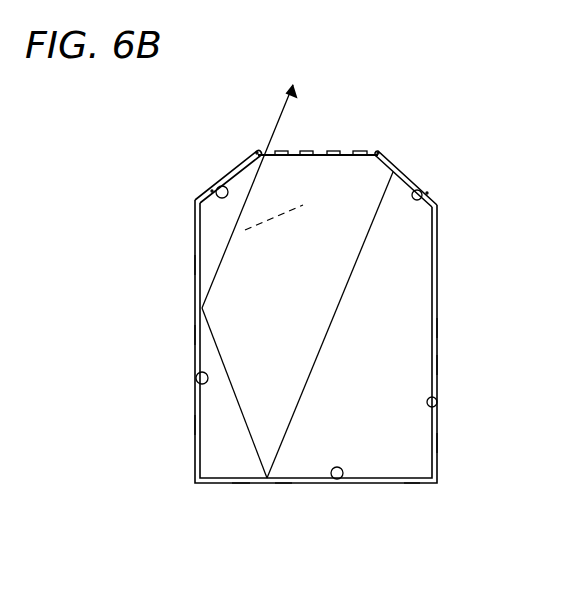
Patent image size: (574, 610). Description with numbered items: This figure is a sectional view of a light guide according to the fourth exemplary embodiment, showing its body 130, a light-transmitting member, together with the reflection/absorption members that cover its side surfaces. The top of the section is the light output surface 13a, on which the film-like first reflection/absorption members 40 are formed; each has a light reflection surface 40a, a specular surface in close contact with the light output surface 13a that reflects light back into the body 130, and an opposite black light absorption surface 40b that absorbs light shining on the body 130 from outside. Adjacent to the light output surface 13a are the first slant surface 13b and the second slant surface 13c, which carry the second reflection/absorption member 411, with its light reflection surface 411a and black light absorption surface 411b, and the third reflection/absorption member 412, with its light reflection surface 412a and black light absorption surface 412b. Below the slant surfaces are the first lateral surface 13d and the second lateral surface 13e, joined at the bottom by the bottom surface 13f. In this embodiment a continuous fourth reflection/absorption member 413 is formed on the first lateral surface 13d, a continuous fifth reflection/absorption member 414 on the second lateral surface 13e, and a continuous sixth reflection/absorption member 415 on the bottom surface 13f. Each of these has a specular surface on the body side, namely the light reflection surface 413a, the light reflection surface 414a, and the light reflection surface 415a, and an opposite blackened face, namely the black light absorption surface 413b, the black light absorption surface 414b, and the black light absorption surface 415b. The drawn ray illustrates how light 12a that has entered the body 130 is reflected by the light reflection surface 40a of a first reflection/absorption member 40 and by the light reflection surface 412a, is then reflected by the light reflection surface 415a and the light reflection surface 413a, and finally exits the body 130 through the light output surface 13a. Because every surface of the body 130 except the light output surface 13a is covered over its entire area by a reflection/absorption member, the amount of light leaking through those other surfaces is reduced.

The light 12a is at (355, 273).
The light output surface 13a is at (290, 227).
The first slant surface 13b is at (200, 200).
The second slant surface 13c is at (437, 198).
The first lateral surface 13d is at (195, 265).
The second lateral surface 13e is at (437, 328).
The bottom surface 13f is at (240, 483).
The body 130 is at (419, 297).
The first reflection/absorption members 40 is at (302, 153).
The light reflection surface 40a is at (290, 227).
The black light absorption surface 40b is at (362, 152).
The second reflection/absorption member 411 is at (234, 168).
The light reflection surface 411a is at (211, 191).
The black light absorption surface 411b is at (252, 153).
The third reflection/absorption member 412 is at (406, 164).
The light reflection surface 412a is at (427, 192).
The black light absorption surface 412b is at (290, 227).
The fourth reflection/absorption member 413 is at (195, 333).
The light reflection surface 413a is at (198, 380).
The black light absorption surface 413b is at (195, 425).
The fifth reflection/absorption member 414 is at (440, 365).
The light reflection surface 414a is at (437, 403).
The black light absorption surface 414b is at (438, 443).
The sixth reflection/absorption member 415 is at (283, 483).
The light reflection surface 415a is at (340, 482).
The black light absorption surface 415b is at (412, 485).